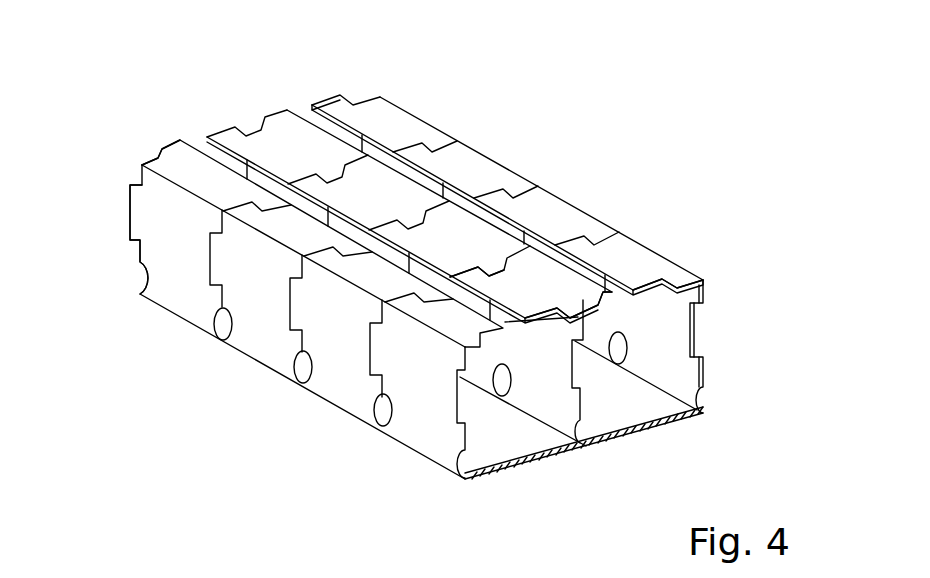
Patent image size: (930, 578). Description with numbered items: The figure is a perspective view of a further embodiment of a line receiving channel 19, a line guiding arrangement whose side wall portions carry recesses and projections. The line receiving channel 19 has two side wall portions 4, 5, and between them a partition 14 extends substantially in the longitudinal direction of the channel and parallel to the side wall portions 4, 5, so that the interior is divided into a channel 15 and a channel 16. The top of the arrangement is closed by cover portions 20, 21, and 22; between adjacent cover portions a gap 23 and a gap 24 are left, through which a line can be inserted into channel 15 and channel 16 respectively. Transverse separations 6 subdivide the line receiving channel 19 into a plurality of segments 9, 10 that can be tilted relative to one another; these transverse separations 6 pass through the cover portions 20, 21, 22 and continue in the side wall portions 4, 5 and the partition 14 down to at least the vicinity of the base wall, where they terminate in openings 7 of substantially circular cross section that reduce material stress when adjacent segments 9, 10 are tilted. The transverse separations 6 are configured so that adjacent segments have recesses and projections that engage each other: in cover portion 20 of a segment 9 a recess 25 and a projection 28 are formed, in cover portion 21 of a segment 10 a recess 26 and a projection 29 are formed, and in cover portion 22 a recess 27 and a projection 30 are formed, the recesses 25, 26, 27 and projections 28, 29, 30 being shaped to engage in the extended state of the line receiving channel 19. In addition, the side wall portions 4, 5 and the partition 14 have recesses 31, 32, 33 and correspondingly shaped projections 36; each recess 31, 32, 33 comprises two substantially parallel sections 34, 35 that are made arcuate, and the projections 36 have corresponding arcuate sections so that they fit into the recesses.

The side wall portion 4 is at (680, 372).
The side wall portion 5 is at (432, 395).
The transverse separation 6 is at (205, 290).
The opening 7 is at (220, 293).
The segment 9 is at (352, 378).
The segment 10 is at (262, 333).
The partition 14 is at (555, 380).
The channel 15 is at (643, 418).
The channel 16 is at (518, 452).
The line receiving channel 19 is at (627, 123).
The cover portion 20 is at (478, 170).
The cover portion 21 is at (317, 148).
The cover portion 22 is at (202, 177).
The gap 23 is at (575, 265).
The gap 24 is at (460, 252).
The recess 25 is at (357, 92).
The recess 26 is at (255, 123).
The recess 27 is at (148, 150).
The projection 28 is at (682, 277).
The projection 29 is at (613, 305).
The projection 30 is at (452, 355).
The recess 31 is at (703, 330).
The recess 32 is at (585, 373).
The recess 33 is at (207, 275).
The section 34 is at (383, 330).
The section 35 is at (352, 385).
The projection 36 is at (135, 213).